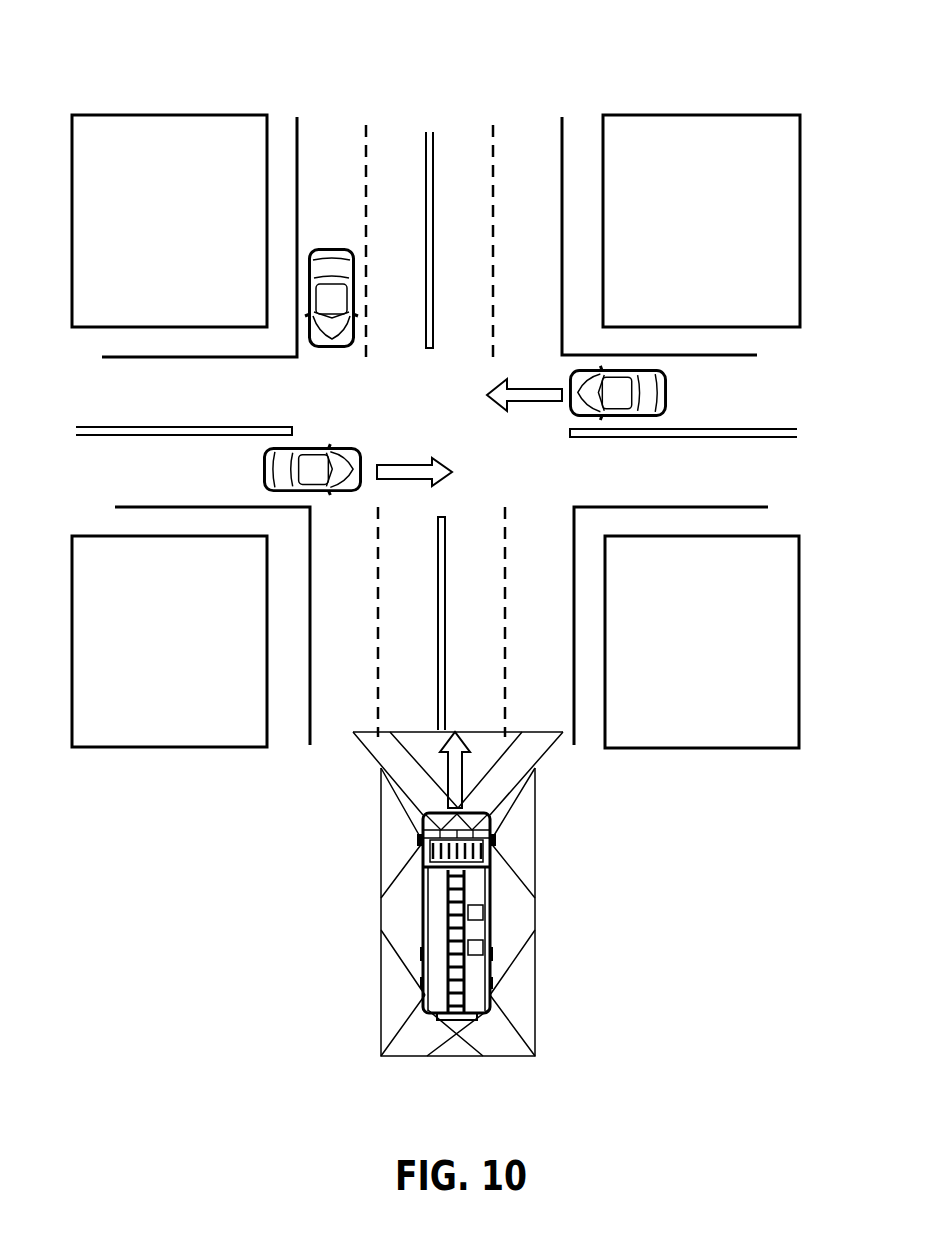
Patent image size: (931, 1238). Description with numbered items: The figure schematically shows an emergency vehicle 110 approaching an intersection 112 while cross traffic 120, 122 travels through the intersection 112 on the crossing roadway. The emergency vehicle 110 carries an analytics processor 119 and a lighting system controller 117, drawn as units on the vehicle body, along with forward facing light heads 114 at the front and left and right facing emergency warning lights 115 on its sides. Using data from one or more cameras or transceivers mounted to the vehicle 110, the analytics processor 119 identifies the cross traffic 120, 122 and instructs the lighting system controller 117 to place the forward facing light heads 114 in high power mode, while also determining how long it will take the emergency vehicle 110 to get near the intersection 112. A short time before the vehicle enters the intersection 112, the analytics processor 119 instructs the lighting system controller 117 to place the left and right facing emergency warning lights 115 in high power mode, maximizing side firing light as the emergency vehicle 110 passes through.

The emergency vehicle 110 is at (468, 898).
The intersection 112 is at (447, 416).
The forward facing light heads 114 is at (483, 808).
The left and right facing emergency warning lights 115 is at (496, 836).
The lighting system controller 117 is at (484, 948).
The analytics processor 119 is at (484, 913).
The cross traffic 120 is at (689, 399).
The cross traffic 122 is at (355, 420).